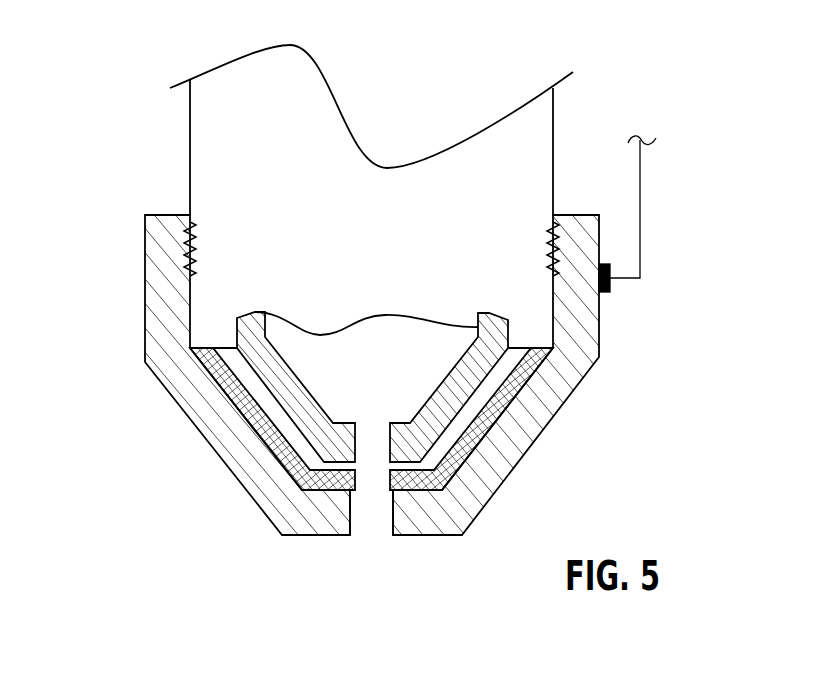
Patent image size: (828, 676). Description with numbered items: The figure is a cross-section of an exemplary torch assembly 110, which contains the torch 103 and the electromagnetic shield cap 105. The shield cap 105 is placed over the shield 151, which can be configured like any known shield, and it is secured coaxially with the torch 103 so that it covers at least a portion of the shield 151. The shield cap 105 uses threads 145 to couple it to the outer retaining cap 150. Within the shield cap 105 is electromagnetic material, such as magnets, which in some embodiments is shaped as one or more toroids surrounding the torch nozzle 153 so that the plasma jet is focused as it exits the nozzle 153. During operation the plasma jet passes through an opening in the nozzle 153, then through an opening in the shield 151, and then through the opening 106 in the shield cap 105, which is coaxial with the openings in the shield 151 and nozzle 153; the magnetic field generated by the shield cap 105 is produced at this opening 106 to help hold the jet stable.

The torch 103 is at (385, 163).
The shield cap 105 is at (600, 357).
The opening 106 is at (370, 533).
The torch assembly 110 is at (640, 40).
The threads 145 is at (190, 225).
The outer retaining cap 150 is at (236, 131).
The shield 151 is at (495, 403).
The torch nozzle 153 is at (495, 342).